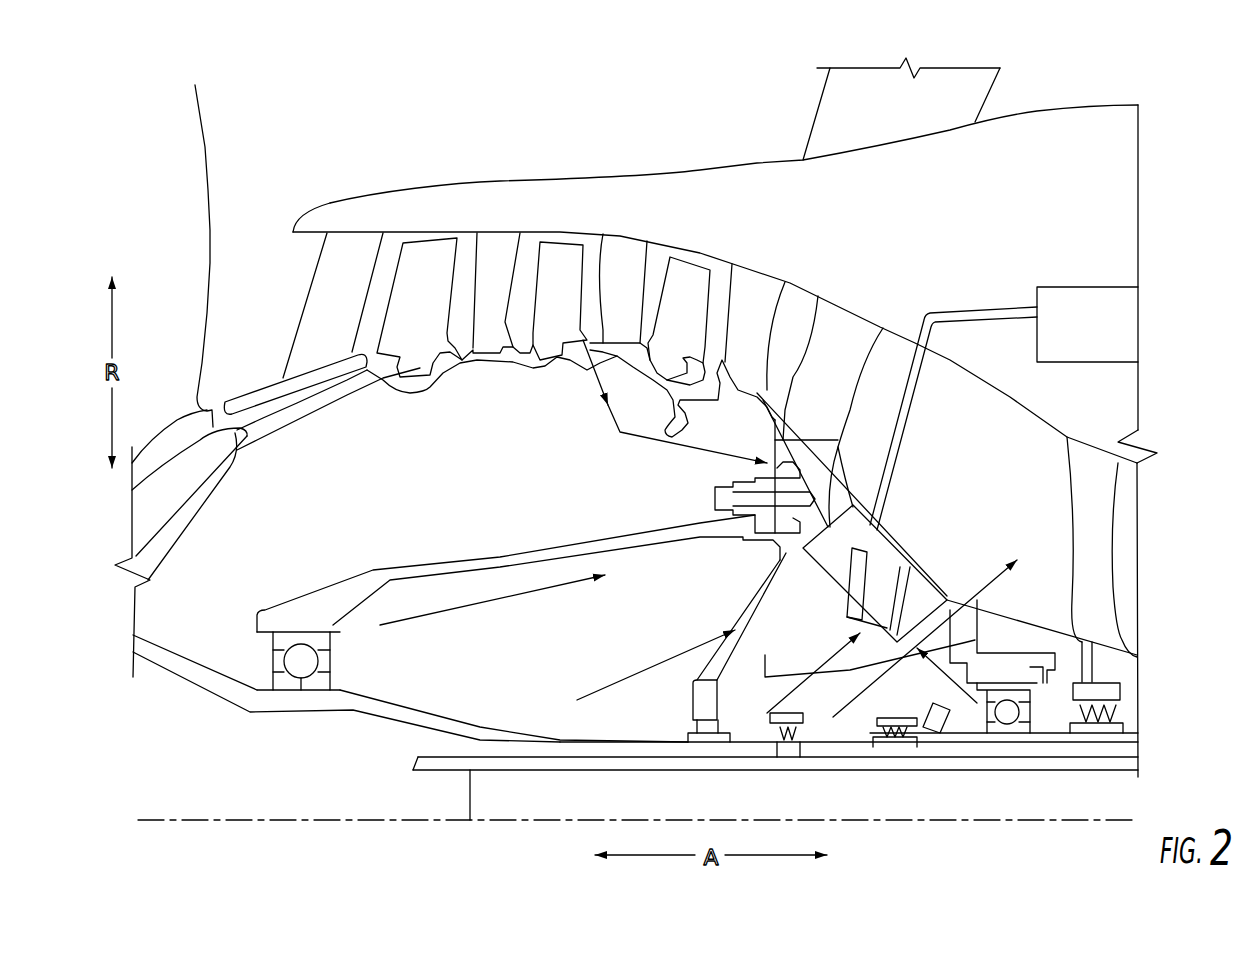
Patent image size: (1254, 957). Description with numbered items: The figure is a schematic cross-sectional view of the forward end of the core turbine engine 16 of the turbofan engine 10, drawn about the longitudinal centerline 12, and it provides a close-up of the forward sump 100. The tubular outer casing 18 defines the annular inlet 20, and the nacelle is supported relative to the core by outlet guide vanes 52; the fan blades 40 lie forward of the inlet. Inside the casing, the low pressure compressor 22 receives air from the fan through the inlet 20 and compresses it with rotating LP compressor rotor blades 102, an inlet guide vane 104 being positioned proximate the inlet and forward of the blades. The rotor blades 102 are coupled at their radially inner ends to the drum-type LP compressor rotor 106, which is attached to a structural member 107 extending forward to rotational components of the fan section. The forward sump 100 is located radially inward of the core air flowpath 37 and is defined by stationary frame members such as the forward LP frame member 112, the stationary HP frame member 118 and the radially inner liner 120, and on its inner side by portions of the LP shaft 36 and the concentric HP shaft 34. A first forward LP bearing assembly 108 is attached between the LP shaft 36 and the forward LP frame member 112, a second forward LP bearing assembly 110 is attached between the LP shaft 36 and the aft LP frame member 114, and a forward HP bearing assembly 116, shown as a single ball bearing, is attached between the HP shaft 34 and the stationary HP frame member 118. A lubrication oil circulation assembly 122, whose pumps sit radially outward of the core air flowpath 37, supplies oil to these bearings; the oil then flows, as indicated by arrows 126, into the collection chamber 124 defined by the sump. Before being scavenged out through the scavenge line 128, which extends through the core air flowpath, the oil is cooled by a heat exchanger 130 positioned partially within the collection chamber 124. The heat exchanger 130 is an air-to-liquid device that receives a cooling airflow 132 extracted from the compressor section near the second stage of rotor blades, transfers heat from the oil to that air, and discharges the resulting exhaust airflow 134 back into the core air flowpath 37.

The turbofan engine 10 is at (355, 103).
The longitudinal centerline 12 is at (349, 820).
The core turbine engine 16 is at (1066, 127).
The outer casing 18 is at (757, 163).
The annular inlet 20 is at (270, 252).
The low pressure compressor 22 is at (595, 226).
The HP shaft 34 is at (1010, 742).
The LP shaft 36 is at (573, 750).
The core air flowpath 37 is at (980, 464).
The fan blades 40 is at (190, 157).
The outlet guide vanes 52 is at (984, 102).
The forward sump 100 is at (550, 507).
The LP compressor rotor blades 102 is at (552, 263).
The inlet guide vane 104 is at (347, 265).
The LP compressor rotor 106 is at (540, 367).
The structural member 107 is at (226, 470).
The first forward LP bearing assembly 108 is at (264, 666).
The second forward LP bearing assembly 110 is at (735, 725).
The forward LP frame member 112 is at (485, 573).
The aft LP frame member 114 is at (752, 628).
The forward HP bearing assembly 116 is at (1039, 711).
The stationary HP frame member 118 is at (1007, 652).
The radially inner liner 120 is at (880, 557).
The lubrication oil circulation assembly 122 is at (1053, 258).
The collection chamber 124 is at (840, 497).
The arrows 126 is at (503, 597).
The scavenge line 128 is at (900, 382).
The heat exchanger 130 is at (880, 557).
The cooling airflow 132 is at (680, 440).
The exhaust airflow 134 is at (975, 595).